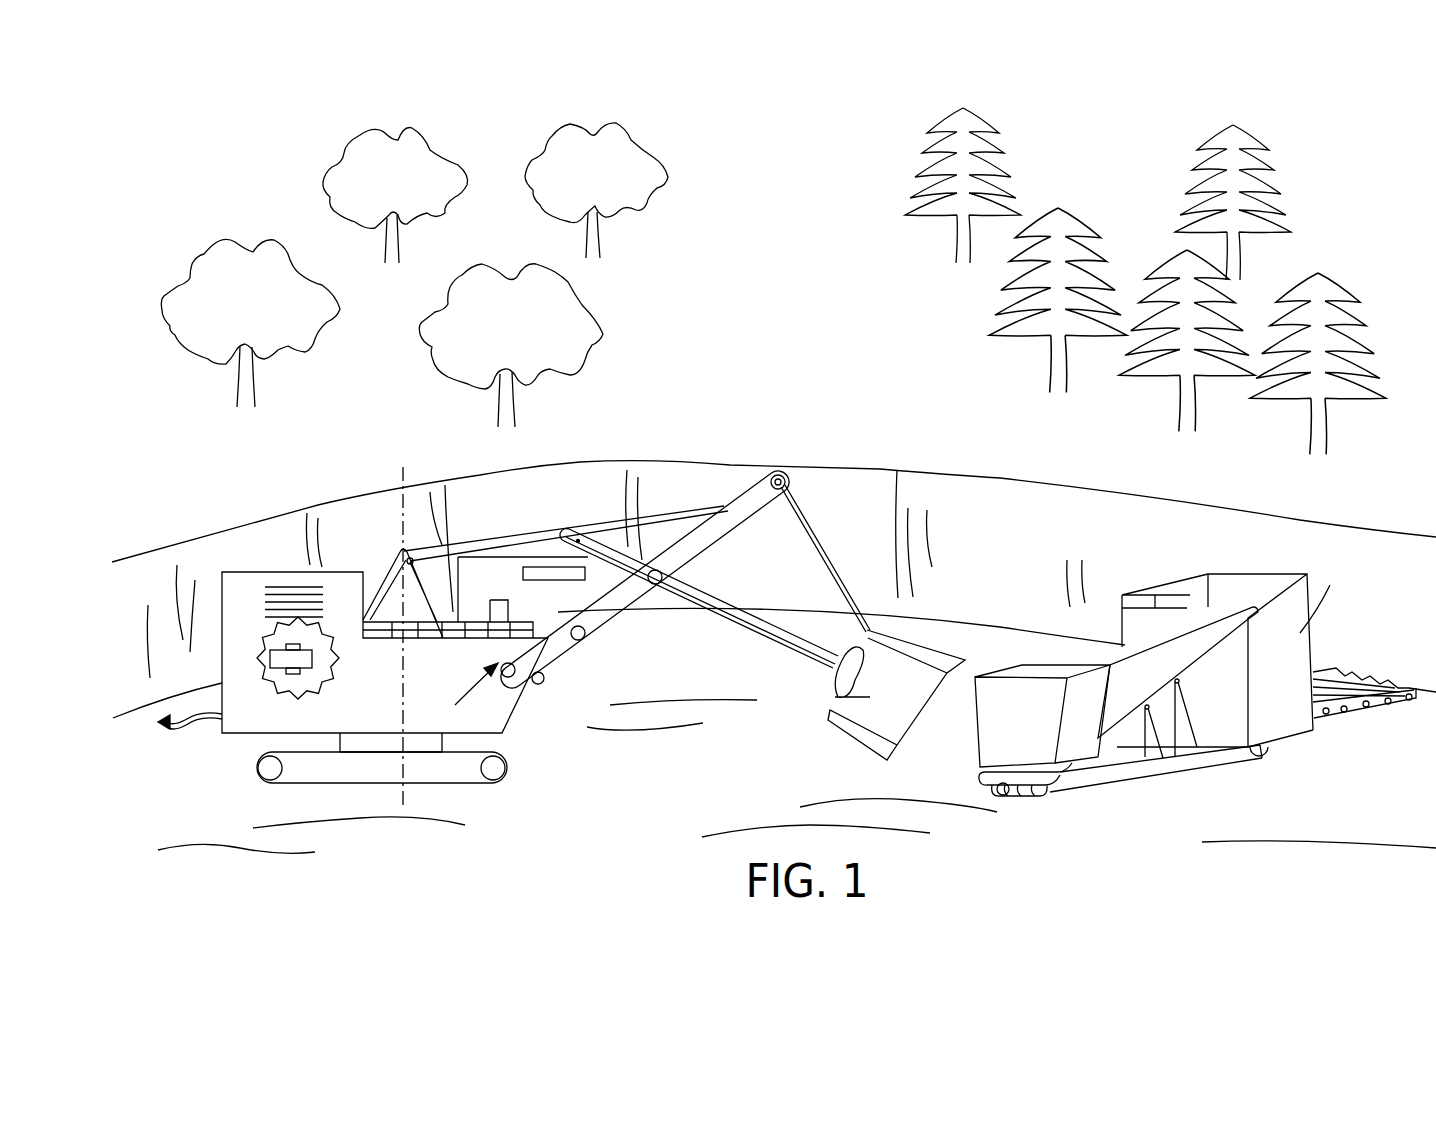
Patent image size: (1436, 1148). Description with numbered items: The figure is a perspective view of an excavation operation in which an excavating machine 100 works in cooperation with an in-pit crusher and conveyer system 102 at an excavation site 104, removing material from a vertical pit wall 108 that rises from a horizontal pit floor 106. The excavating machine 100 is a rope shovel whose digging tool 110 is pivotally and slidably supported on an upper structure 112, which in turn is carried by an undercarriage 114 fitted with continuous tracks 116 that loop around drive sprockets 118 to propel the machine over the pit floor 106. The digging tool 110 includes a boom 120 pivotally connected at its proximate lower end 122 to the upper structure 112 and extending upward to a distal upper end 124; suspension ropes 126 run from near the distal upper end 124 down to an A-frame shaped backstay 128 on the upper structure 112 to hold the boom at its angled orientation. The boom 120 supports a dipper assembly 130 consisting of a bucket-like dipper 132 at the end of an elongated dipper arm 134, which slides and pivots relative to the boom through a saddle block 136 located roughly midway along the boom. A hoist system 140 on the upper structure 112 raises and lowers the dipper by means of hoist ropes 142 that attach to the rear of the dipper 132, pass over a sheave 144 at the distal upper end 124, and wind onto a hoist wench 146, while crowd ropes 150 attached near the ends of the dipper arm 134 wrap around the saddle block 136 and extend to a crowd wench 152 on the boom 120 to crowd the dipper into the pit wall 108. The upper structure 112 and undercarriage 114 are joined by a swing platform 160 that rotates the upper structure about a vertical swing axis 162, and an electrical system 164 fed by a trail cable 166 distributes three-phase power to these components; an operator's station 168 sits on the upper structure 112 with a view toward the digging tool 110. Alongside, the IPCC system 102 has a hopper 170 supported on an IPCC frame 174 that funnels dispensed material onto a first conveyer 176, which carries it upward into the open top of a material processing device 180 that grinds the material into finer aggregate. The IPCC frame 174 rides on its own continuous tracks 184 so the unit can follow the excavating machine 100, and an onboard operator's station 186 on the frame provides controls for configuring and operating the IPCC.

The excavating machine 100 is at (378, 524).
The in-pit crusher and conveyer (IPCC) system 102 is at (1105, 513).
The excavation site 104 is at (964, 447).
The pit floor 106 is at (669, 803).
The pit wall 108 is at (247, 558).
The digging tool 110 is at (775, 478).
The upper structure 112 is at (222, 652).
The undercarriage 114 is at (389, 794).
The continuous tracks 116 is at (452, 785).
The drive sprockets 118 is at (265, 772).
The boom 120 is at (687, 548).
The proximate lower end 122 is at (542, 683).
The distal upper end 124 is at (778, 474).
The suspension ropes 126 is at (513, 533).
The A-frame shaped backstay 128 is at (412, 556).
The dipper assembly 130 is at (737, 602).
The dipper 132 is at (835, 697).
The dipper arm 134 is at (788, 632).
The saddle block 136 is at (658, 588).
The hoist system 140 is at (462, 697).
The hoist ropes 142 is at (826, 553).
The sheave 144 is at (786, 478).
The hoist wench 146 is at (510, 678).
The crowd ropes 150 is at (713, 604).
The crowd wench 152 is at (585, 642).
The swing platform 160 is at (322, 740).
The swing axis 162 is at (418, 463).
The electrical system 164 is at (305, 662).
The trail cable 166 is at (167, 734).
The operator's station 168 is at (602, 538).
The hopper 170 is at (1030, 668).
The IPCC frame 174 is at (1170, 720).
The first conveyer 176 is at (1000, 772).
The material processing device 180 is at (1300, 627).
The continuous tracks 184 is at (1212, 755).
The operator's station 186 is at (1170, 588).